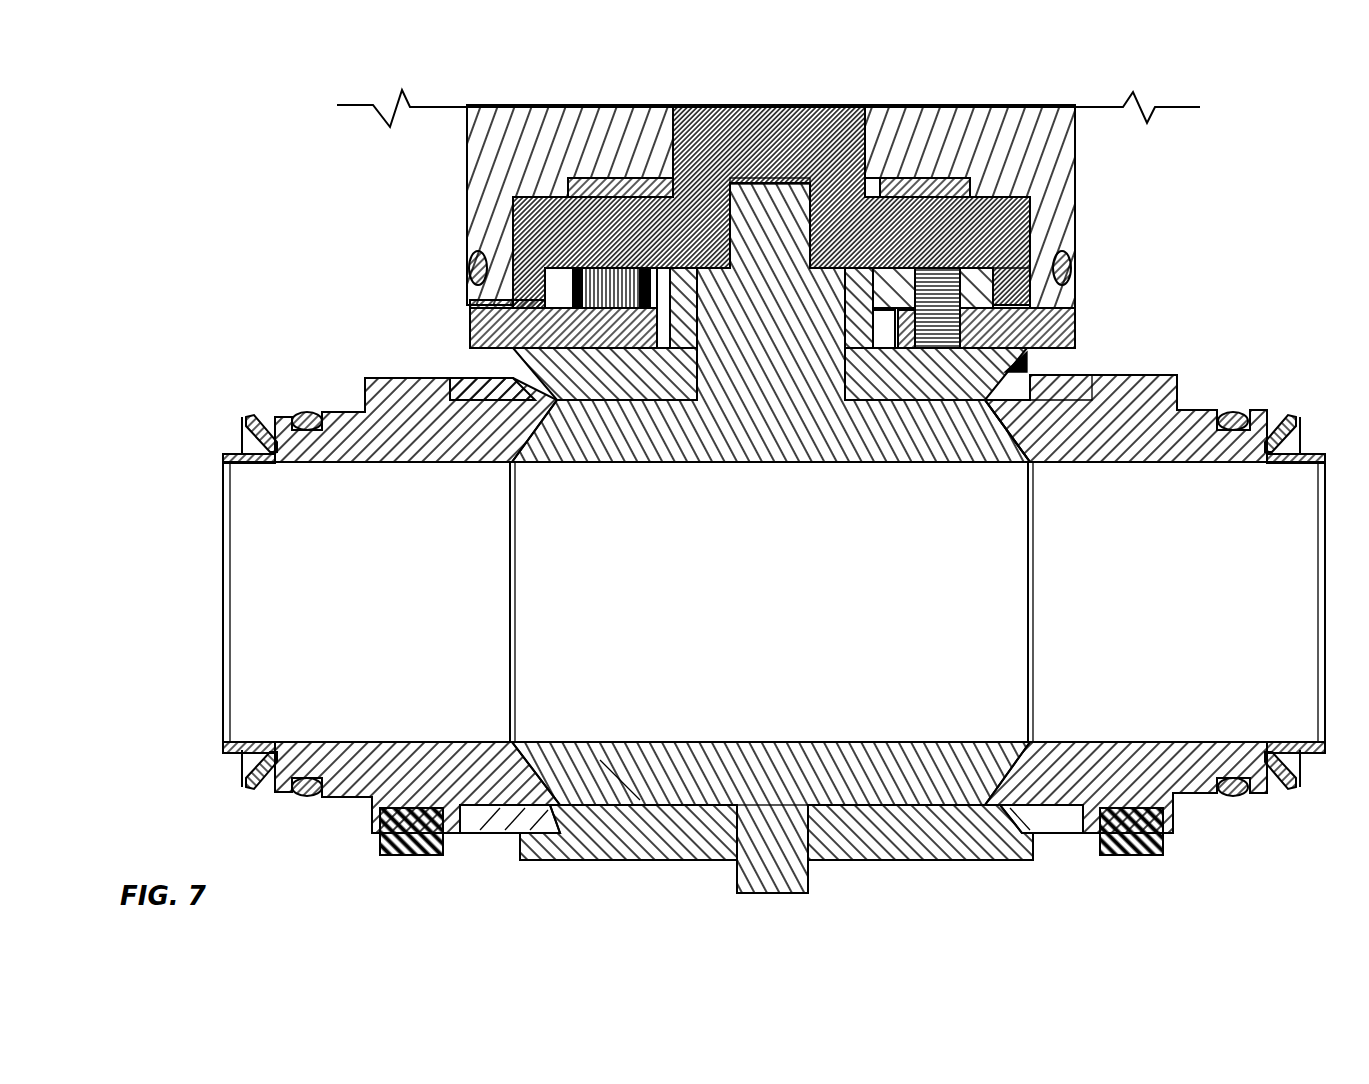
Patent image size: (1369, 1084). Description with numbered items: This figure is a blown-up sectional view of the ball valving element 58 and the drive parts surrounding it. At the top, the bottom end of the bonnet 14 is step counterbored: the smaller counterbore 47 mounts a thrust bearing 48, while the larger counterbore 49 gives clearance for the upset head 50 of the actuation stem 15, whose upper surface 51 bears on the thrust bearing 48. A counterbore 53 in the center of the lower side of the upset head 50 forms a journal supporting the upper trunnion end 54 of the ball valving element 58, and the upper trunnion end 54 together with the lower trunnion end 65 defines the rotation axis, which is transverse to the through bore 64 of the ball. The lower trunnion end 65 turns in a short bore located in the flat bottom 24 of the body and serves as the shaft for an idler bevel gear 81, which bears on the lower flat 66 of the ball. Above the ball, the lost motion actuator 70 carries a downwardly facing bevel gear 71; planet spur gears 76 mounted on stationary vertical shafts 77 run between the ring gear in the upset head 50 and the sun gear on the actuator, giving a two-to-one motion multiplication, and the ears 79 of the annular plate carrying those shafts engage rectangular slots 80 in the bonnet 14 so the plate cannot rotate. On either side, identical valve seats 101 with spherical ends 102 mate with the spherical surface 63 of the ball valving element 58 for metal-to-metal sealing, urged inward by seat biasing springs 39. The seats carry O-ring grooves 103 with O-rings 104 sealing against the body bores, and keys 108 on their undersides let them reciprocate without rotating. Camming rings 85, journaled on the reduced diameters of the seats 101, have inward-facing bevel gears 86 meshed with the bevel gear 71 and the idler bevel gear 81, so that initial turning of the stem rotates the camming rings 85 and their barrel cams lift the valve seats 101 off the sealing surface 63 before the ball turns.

The bonnet 14 is at (806, 206).
The actuation stem 15 is at (970, 206).
The flat bottom 24 is at (771, 830).
The seat biasing springs 39 is at (1299, 642).
The smaller counterbore 47 is at (960, 168).
The thrust bearing 48 is at (570, 205).
The larger counterbore 49 is at (1069, 242).
The upset head 50 is at (462, 244).
The upper surface 51 is at (580, 168).
The counterbore 53 is at (771, 206).
The upper trunnion end 54 is at (771, 267).
The ball valving element 58 is at (596, 832).
The spherical surface 63 is at (1126, 418).
The through bore 64 is at (983, 464).
The lower trunnion end 65 is at (795, 882).
The lower flat 66 is at (598, 854).
The lost motion actuator 70 is at (563, 374).
The downwardly facing bevel gear 71 is at (982, 372).
The planet spur gears 76 is at (593, 266).
The stationary vertical shafts 77 is at (933, 327).
The ears 79 is at (529, 328).
The rectangular slots 80 is at (473, 293).
The idler bevel gear 81 is at (920, 858).
The camming rings 85 is at (432, 355).
The bevel gears 86 is at (1016, 882).
The valve seats 101 is at (416, 403).
The spherical ends 102 is at (1126, 787).
The O-ring grooves 103 is at (417, 802).
The O-rings 104 is at (264, 634).
The keys 108 is at (771, 867).